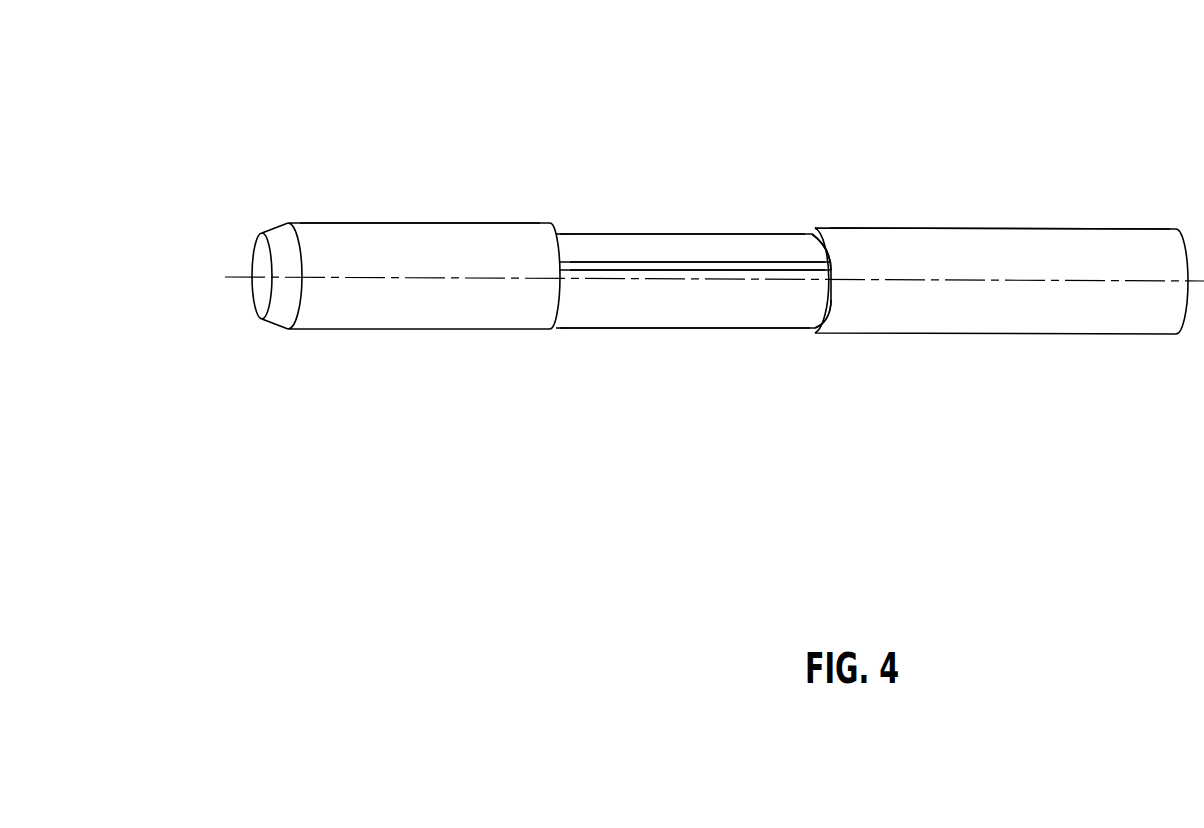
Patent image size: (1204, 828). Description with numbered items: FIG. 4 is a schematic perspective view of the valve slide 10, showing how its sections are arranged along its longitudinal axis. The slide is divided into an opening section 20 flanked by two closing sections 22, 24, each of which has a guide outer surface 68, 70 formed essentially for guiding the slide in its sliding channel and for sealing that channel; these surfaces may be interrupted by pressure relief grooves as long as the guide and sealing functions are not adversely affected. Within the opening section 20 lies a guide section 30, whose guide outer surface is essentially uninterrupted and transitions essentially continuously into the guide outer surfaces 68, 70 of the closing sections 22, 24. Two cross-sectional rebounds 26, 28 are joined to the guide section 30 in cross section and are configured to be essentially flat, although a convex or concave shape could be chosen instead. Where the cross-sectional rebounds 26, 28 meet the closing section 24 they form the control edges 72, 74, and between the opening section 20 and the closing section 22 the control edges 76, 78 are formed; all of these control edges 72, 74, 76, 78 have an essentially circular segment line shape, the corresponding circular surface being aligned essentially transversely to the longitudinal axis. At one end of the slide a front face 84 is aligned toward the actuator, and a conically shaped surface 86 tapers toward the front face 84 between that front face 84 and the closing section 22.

The valve slide 10 is at (1118, 152).
The opening section 20 is at (818, 337).
The closing section 22 is at (287, 337).
The closing section 24 is at (1173, 337).
The cross-sectional rebound 26 is at (723, 329).
The cross-sectional rebound 28 is at (712, 235).
The guide section 30 is at (677, 262).
The guide outer surface 68 is at (438, 222).
The guide outer surface 70 is at (990, 228).
The control edge 72 is at (817, 226).
The control edge 74 is at (835, 305).
The control edge 76 is at (563, 305).
The control edge 78 is at (563, 247).
The front face 84 is at (257, 290).
The conically shaped surface 86 is at (275, 225).